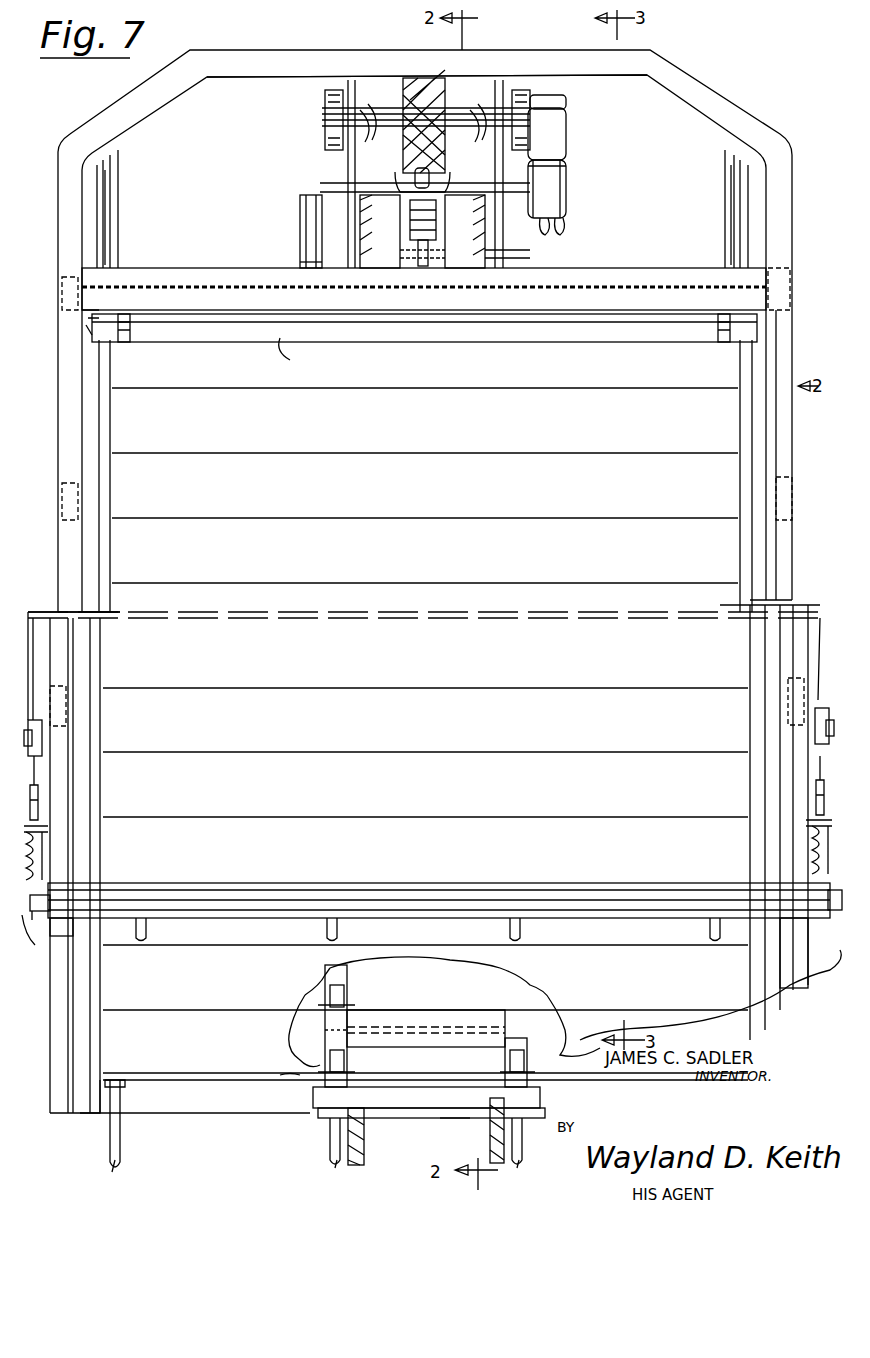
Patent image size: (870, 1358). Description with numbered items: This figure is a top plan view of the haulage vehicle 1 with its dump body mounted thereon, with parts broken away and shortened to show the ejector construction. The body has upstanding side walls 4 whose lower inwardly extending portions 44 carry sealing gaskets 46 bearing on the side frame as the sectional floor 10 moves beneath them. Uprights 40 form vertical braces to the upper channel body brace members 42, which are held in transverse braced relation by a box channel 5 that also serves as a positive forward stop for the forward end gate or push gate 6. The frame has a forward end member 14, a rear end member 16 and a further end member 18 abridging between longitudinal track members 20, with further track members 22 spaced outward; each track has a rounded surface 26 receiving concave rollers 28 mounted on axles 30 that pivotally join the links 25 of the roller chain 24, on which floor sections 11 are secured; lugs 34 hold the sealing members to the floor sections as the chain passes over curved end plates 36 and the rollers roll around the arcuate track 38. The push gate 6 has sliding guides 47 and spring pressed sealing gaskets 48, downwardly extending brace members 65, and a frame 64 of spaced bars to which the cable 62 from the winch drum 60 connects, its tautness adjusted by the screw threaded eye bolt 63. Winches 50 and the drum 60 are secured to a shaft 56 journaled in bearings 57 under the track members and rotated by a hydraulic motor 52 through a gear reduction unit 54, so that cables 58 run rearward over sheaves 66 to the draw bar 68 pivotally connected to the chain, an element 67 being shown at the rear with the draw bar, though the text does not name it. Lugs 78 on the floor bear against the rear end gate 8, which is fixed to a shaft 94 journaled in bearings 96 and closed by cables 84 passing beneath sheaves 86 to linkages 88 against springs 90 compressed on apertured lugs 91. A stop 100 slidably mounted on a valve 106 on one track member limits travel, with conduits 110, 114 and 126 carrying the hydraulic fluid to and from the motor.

The haulage vehicle 1 is at (775, 78).
The side walls 4 is at (80, 448).
The box channel 5 is at (638, 266).
The forward end gate or push gate 6 is at (600, 335).
The rear end gate 8 is at (320, 880).
The sectional floor 10 is at (99, 563).
The floor sections 11 is at (195, 1078).
The forward end member 14 is at (290, 66).
The end member 16 is at (243, 1105).
The end member 18 is at (425, 1020).
The track members 20 is at (347, 170).
The track members 22 is at (120, 252).
The roller chain 24 is at (378, 968).
The links 25 is at (325, 1040).
The rounded surface 26 is at (108, 235).
The concave rollers 28 is at (330, 1000).
The axles 30 is at (300, 1065).
The lugs 34 is at (348, 990).
The curved end plates 36 is at (122, 1145).
The arcuate track 38 is at (117, 1170).
The uprights 40 is at (60, 290).
The channel body brace member 42 is at (65, 345).
The inwardly extending portions 44 is at (735, 480).
The sealing gasket 46 is at (745, 555).
The sliding guides 47 is at (165, 342).
The sealing gasket 48 is at (88, 330).
The winches 50 is at (375, 112).
The motor 52 is at (562, 182).
The gear reduction unit 54 is at (562, 125).
The shaft 56 is at (556, 110).
The bearings 57 is at (325, 118).
The cables 58 is at (372, 230).
The winch drum 60 is at (445, 95).
The cable 62 is at (415, 175).
The screw threaded eye bolt 63 is at (410, 225).
The frame 64 is at (400, 258).
The brace members 65 is at (510, 258).
The sheaves 66 is at (364, 1150).
The cross plate 67 is at (445, 1118).
The transverse bar or draw bar 68 is at (325, 1095).
The lugs 78 is at (146, 930).
The cable 84 is at (40, 660).
The sheaves 86 is at (40, 755).
The linkages 88 is at (40, 825).
The springs 90 is at (40, 855).
The apertured lugs 91 is at (45, 845).
The shaft 94 is at (34, 940).
The bearings 96 is at (70, 928).
The stop 100 is at (312, 355).
The valve 106 is at (300, 230).
The conduit 110 is at (300, 262).
The conduit 114 is at (548, 226).
The conduit 126 is at (565, 236).